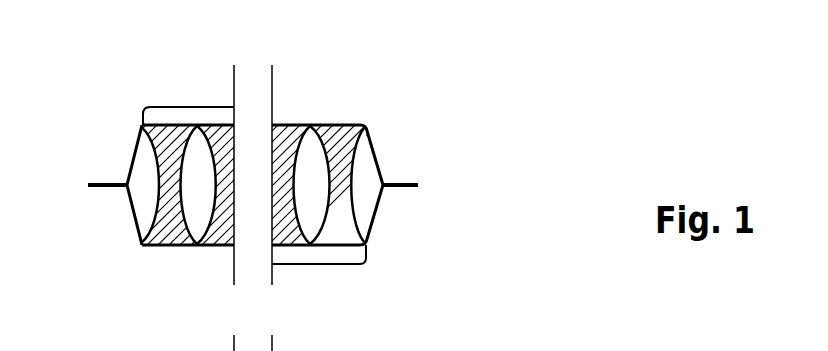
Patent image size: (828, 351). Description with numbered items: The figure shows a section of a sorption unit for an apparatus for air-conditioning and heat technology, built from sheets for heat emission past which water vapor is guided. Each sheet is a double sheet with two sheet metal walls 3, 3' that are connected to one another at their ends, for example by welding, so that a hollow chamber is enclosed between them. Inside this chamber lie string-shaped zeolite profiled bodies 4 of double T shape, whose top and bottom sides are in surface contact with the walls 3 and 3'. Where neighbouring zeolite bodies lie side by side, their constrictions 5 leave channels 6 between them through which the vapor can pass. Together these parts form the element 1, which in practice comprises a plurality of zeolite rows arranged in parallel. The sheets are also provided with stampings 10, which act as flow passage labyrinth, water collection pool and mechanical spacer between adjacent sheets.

The element 1 is at (118, 123).
The sheet metal wall 3 is at (390, 178).
The sheet metal wall 3' is at (198, 220).
The zeolite profiled body 4 is at (223, 130).
The constriction 5 is at (183, 185).
The channel 6 is at (312, 185).
The stamping 10 is at (300, 255).